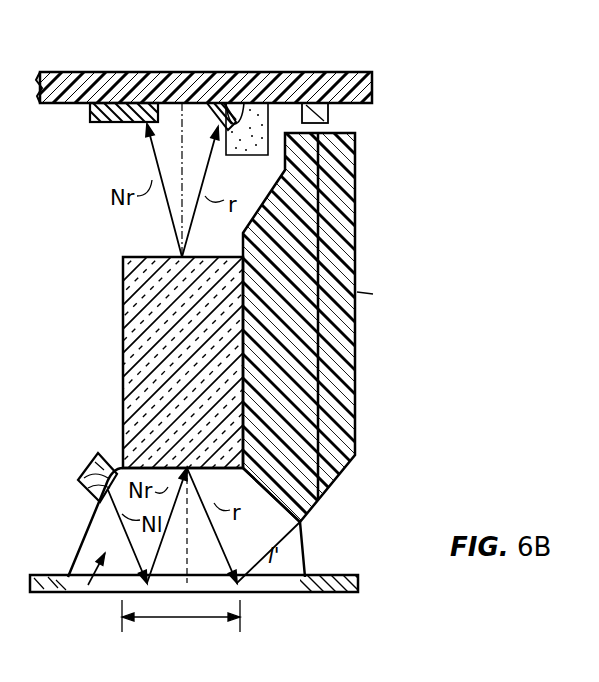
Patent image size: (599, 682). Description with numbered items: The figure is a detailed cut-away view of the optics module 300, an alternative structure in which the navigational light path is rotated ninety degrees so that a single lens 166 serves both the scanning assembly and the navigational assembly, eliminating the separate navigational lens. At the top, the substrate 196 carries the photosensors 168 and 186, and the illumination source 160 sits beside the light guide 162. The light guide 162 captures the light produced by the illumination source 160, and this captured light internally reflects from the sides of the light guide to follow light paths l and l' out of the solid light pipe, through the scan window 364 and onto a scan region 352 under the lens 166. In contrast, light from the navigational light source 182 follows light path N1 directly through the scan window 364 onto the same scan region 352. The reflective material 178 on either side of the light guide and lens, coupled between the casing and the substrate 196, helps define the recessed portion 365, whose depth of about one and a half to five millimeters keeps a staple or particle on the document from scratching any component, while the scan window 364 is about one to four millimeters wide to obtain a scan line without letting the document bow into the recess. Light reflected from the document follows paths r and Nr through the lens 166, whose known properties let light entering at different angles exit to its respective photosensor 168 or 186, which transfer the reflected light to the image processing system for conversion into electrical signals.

The substrate 196 is at (318, 72).
The photosensor 186 is at (100, 124).
The photosensor 168 is at (212, 112).
The illumination source 160 is at (330, 118).
The light guide 162 is at (357, 243).
The lens 166 is at (120, 341).
The navigational light source 182 is at (85, 466).
The reflective material 178 is at (306, 557).
The scan window 364 is at (300, 592).
The scan region 352 is at (176, 618).
The recessed portion 365 is at (88, 585).
The optics module 300 is at (437, 178).